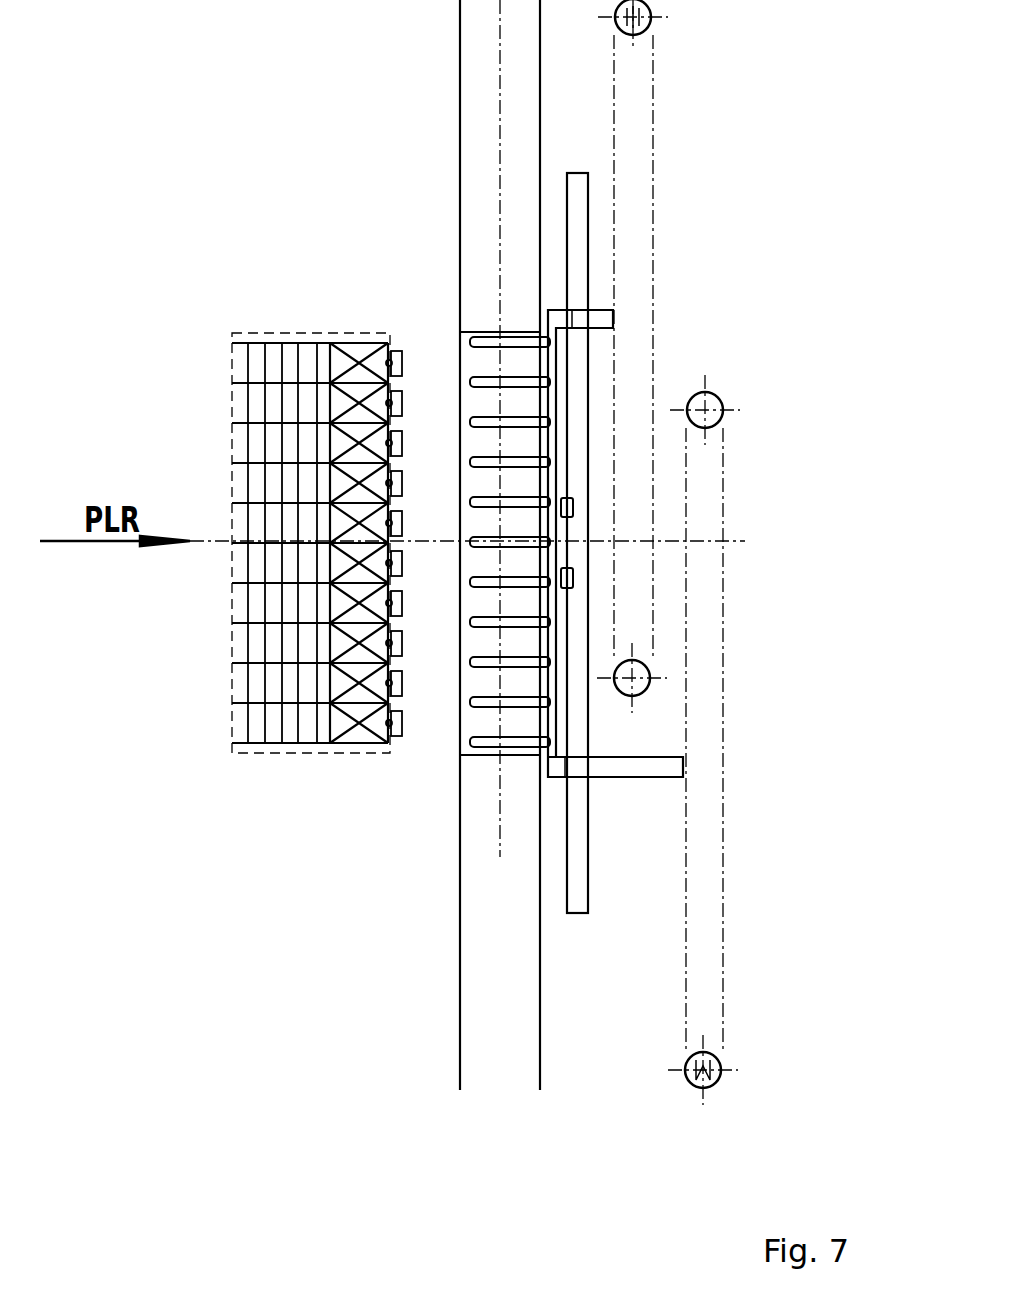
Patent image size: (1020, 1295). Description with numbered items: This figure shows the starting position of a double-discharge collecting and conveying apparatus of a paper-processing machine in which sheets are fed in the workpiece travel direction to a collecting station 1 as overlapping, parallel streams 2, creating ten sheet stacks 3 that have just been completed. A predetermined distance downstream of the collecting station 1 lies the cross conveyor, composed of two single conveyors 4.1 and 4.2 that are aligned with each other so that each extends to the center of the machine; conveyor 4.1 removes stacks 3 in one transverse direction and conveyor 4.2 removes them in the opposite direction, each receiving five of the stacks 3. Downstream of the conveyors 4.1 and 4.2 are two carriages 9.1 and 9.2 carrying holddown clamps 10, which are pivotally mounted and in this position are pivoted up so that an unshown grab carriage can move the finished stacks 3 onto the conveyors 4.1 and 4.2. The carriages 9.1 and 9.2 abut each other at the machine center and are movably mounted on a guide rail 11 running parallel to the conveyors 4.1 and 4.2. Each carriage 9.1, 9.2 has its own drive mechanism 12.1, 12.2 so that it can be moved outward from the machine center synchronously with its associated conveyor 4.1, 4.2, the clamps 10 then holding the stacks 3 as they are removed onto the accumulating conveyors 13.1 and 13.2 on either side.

The collecting station 1 is at (225, 274).
The overlapping streams 2 is at (245, 680).
The sheet stacks 3 is at (350, 722).
The single conveyor 4.1 is at (473, 358).
The single conveyor 4.2 is at (483, 725).
The carriage 9.1 is at (548, 371).
The carriage 9.2 is at (548, 710).
The holddown clamps 10 is at (525, 422).
The guide rail 11 is at (573, 247).
The drive mechanism 12.1 is at (655, 135).
The drive mechanism 12.2 is at (725, 945).
The accumulating conveyor 13.1 is at (478, 159).
The accumulating conveyor 13.2 is at (488, 940).